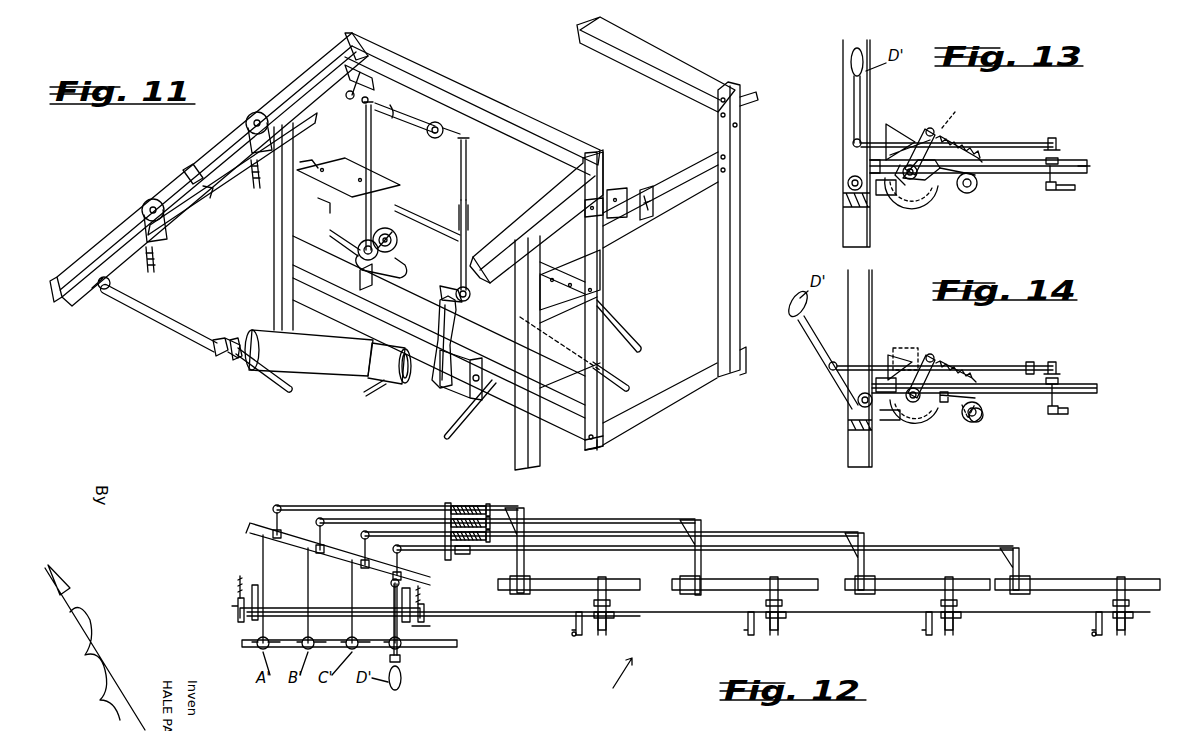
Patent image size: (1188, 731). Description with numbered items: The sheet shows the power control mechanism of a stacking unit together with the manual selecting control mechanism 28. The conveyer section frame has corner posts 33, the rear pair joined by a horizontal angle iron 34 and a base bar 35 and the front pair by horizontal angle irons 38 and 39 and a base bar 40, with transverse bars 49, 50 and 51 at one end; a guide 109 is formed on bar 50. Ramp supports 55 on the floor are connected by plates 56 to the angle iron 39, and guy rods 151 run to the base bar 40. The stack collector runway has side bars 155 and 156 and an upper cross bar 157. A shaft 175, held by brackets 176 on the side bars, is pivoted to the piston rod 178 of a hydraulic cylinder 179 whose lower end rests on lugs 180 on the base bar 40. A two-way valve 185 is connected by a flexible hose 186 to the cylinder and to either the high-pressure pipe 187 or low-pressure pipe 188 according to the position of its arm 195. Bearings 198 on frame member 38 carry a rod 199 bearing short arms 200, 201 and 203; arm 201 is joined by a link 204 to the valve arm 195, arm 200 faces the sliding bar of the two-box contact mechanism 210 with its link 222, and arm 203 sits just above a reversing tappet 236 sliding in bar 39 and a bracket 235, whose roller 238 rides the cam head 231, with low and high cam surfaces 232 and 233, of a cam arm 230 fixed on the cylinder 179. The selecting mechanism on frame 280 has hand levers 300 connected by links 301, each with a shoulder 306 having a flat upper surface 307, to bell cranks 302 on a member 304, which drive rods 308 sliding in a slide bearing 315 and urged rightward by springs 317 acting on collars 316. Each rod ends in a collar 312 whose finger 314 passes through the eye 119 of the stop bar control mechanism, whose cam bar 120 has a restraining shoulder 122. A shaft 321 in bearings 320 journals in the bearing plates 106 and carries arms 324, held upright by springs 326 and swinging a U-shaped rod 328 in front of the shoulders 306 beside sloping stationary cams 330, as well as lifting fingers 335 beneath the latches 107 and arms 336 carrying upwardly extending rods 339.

In FIG. 12, the control mechanism 28 is at (610, 682).
In FIG. 11, the corner posts 33 is at (604, 303).
In FIG. 11, the horizontal angle iron 34 is at (748, 100).
In FIG. 11, the base bar 35 is at (747, 358).
In FIG. 11, the horizontal angle iron 38 is at (606, 203).
In FIG. 11, the horizontal angle iron 39 is at (604, 266).
In FIG. 11, the base bar 40 is at (605, 442).
In FIG. 11, the transverse bar 49 is at (660, 140).
In FIG. 11, the transverse bar 50 is at (688, 184).
In FIG. 11, the transverse bar 51 is at (676, 392).
In FIG. 11, the ramp supports 55 is at (541, 458).
In FIG. 11, the plates 56 is at (302, 186).
In FIG. 12, the bearing plate 106 is at (607, 630).
In FIG. 13, the latch 107 is at (978, 182).
In FIG. 14, the latch 107 is at (982, 400).
In FIG. 12, the latch 107 is at (606, 582).
In FIG. 11, the guide 109 is at (648, 216).
In FIG. 12, the eye 119 is at (510, 584).
In FIG. 14, the cam bar 120 is at (966, 420).
In FIG. 14, the restraining shoulder 122 is at (980, 422).
In FIG. 11, the guy rods 151 is at (458, 430).
In FIG. 11, the side bar 155 is at (292, 92).
In FIG. 11, the side bar 156 is at (540, 200).
In FIG. 11, the upper cross bar 157 is at (515, 137).
In FIG. 11, the shaft 175 is at (140, 308).
In FIG. 11, the brackets 176 is at (99, 292).
In FIG. 11, the piston rod 178 is at (230, 352).
In FIG. 11, the hydraulic cylinder 179 is at (402, 382).
In FIG. 11, the lugs 180 is at (470, 358).
In FIG. 11, the two-way valve 185 is at (401, 240).
In FIG. 11, the flexible hose 186 is at (357, 258).
In FIG. 11, the pipe 187 is at (632, 342).
In FIG. 11, the pipe 188 is at (620, 380).
In FIG. 11, the arm 195 is at (358, 283).
In FIG. 11, the bearings 198 is at (380, 80).
In FIG. 11, the rod 199 is at (412, 128).
In FIG. 11, the arm 200 is at (345, 63).
In FIG. 11, the arm 201 is at (358, 112).
In FIG. 11, the arm 203 is at (460, 135).
In FIG. 11, the link 204 is at (352, 212).
In FIG. 11, the two-box contact mechanism 210 is at (223, 210).
In FIG. 11, the link 222 is at (222, 145).
In FIG. 11, the cam arm 230 is at (400, 330).
In FIG. 11, the cam head 231 is at (440, 304).
In FIG. 11, the low cam surface 232 is at (456, 296).
In FIG. 11, the high cam surface 233 is at (446, 282).
In FIG. 11, the bracket 235 is at (468, 178).
In FIG. 11, the reversing tappet 236 is at (468, 203).
In FIG. 11, the roller 238 is at (470, 294).
In FIG. 13, the frame 280 is at (1082, 182).
In FIG. 12, the frame 280 is at (450, 650).
In FIG. 13, the hand levers 300 is at (854, 112).
In FIG. 14, the hand levers 300 is at (830, 367).
In FIG. 12, the hand levers 300 is at (401, 668).
In FIG. 13, the link 301 is at (1017, 142).
In FIG. 14, the link 301 is at (1000, 364).
In FIG. 12, the link 301 is at (266, 580).
In FIG. 13, the bell crank 302 is at (1058, 142).
In FIG. 14, the bell crank 302 is at (1052, 360).
In FIG. 12, the bell crank 302 is at (280, 506).
In FIG. 13, the member 304 is at (1088, 168).
In FIG. 14, the member 304 is at (1098, 392).
In FIG. 14, the shoulder 306 is at (912, 370).
In FIG. 12, the shoulder 306 is at (262, 612).
In FIG. 13, the flat upper surface 307 is at (964, 113).
In FIG. 12, the rods 308 is at (402, 533).
In FIG. 12, the collar 312 is at (525, 508).
In FIG. 12, the finger 314 is at (526, 580).
In FIG. 12, the slide bearing 315 is at (448, 502).
In FIG. 12, the collars 316 is at (488, 504).
In FIG. 12, the springs 317 is at (470, 504).
In FIG. 13, the bearings 320 is at (900, 188).
In FIG. 13, the shaft 321 is at (910, 186).
In FIG. 12, the shaft 321 is at (258, 648).
In FIG. 13, the arms 324 is at (930, 128).
In FIG. 14, the arms 324 is at (932, 354).
In FIG. 12, the arms 324 is at (236, 602).
In FIG. 13, the spring 326 is at (960, 142).
In FIG. 14, the spring 326 is at (958, 363).
In FIG. 12, the spring 326 is at (240, 576).
In FIG. 13, the U-shaped rod 328 is at (868, 164).
In FIG. 14, the U-shaped rod 328 is at (896, 350).
In FIG. 12, the U-shaped rod 328 is at (320, 608).
In FIG. 13, the sloping stationary cams 330 is at (888, 125).
In FIG. 14, the sloping stationary cams 330 is at (888, 368).
In FIG. 12, the sloping stationary cams 330 is at (252, 580).
In FIG. 13, the lifting finger 335 is at (925, 196).
In FIG. 14, the lifting finger 335 is at (928, 412).
In FIG. 12, the lifting finger 335 is at (614, 606).
In FIG. 12, the arms 336 is at (575, 628).
In FIG. 12, the rod 339 is at (574, 638).